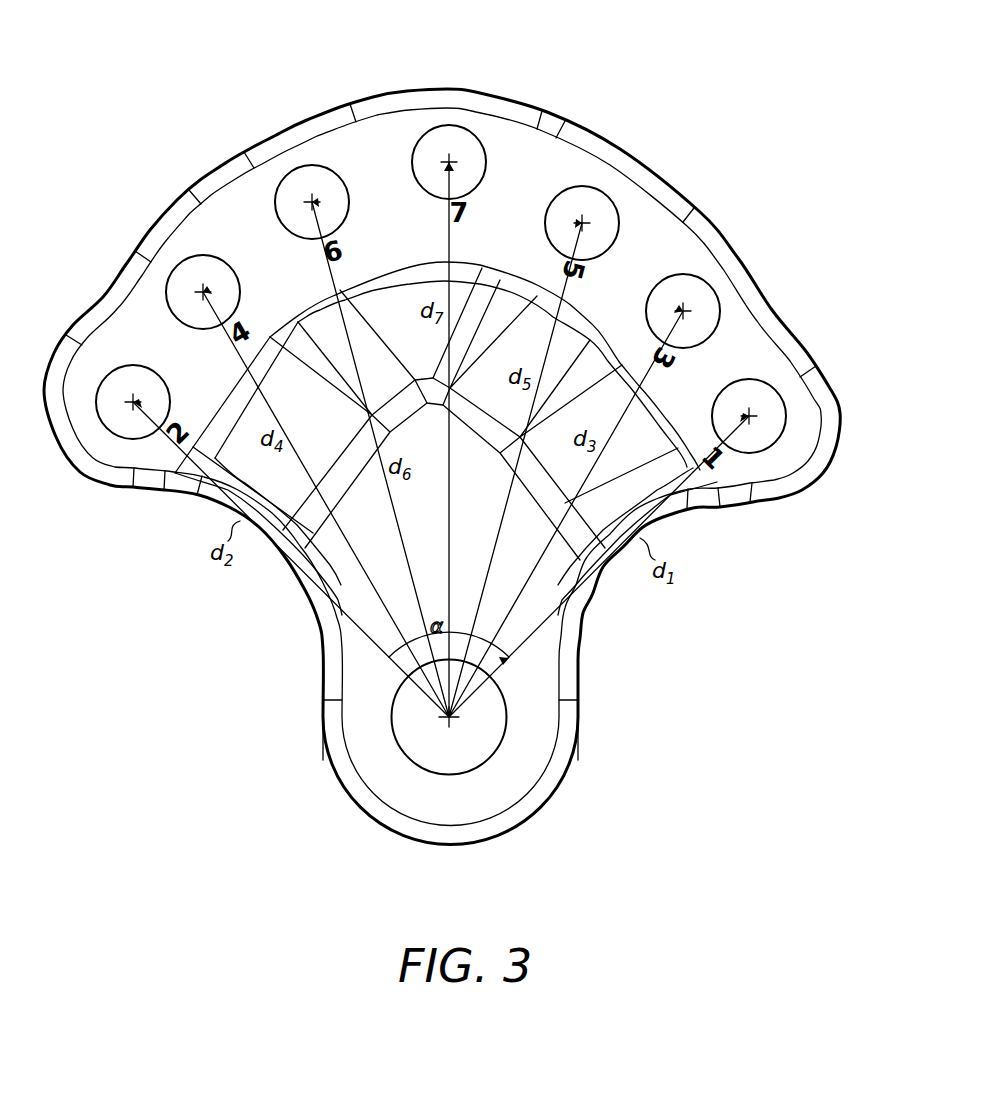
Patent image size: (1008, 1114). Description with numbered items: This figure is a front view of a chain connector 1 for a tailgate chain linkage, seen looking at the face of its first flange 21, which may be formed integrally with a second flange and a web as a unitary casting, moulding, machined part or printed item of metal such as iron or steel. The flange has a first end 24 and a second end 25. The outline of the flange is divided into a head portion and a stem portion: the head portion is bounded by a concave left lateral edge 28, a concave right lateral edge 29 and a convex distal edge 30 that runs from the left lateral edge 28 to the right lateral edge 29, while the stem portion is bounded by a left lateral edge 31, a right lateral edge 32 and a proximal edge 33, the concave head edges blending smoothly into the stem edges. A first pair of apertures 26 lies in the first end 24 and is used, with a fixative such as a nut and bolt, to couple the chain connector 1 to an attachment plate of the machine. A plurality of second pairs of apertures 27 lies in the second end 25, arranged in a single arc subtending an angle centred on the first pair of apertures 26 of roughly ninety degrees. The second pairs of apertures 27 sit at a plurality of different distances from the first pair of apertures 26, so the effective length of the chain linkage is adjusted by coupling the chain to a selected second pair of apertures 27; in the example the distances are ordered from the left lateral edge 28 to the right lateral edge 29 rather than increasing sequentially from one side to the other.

The chain connector 1 is at (616, 56).
The first flange 21 is at (358, 603).
The first end 24 is at (316, 811).
The second end 25 is at (204, 146).
The first pair of apertures 26 is at (489, 746).
The second pairs of apertures 27 is at (113, 383).
The left lateral edge 28 is at (150, 489).
The right lateral edge 29 is at (763, 504).
The distal edge 30 is at (408, 90).
The left lateral edge 31 is at (323, 741).
The right lateral edge 32 is at (578, 748).
The proximal edge 33 is at (449, 846).